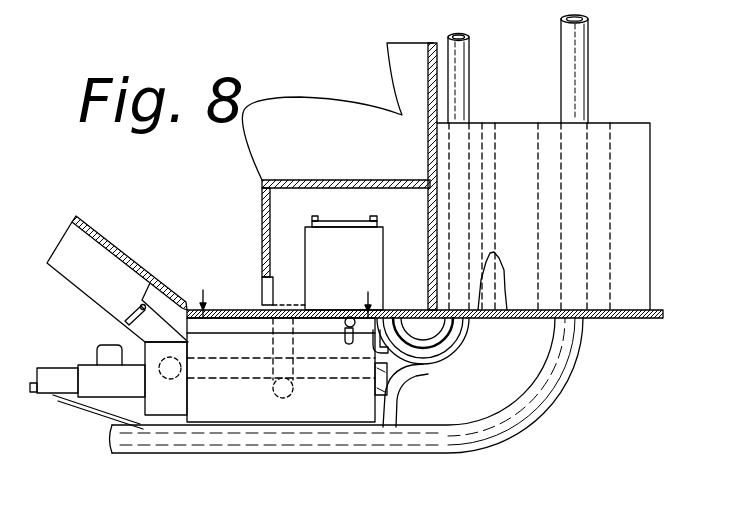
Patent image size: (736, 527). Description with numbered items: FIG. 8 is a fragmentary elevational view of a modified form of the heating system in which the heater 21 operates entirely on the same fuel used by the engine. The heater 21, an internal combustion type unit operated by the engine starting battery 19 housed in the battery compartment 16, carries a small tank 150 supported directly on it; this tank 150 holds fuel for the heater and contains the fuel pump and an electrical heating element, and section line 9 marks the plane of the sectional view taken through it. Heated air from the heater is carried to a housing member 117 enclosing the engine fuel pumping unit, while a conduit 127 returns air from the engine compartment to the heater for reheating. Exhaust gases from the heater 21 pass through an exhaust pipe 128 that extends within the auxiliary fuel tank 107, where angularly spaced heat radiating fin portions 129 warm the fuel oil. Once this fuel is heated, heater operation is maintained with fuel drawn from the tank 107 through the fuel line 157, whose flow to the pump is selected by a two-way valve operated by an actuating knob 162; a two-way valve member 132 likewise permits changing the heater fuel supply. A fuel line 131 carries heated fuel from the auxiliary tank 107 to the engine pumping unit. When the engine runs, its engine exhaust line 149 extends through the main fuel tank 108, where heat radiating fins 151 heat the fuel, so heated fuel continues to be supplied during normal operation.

The section line 9- 9 is at (277, 293).
The battery compartment 16 is at (285, 200).
The engine starting battery 19 is at (373, 250).
The heater 21 is at (243, 413).
The auxiliary fuel tank 107 is at (467, 128).
The main fuel tank 108 is at (637, 200).
The housing member 117 is at (135, 212).
The conduit 127 is at (90, 283).
The exhaust pipe 128 is at (438, 355).
The heat radiating fin portions 129 is at (485, 155).
The fuel line 131 is at (383, 424).
The two-way valve member 132 is at (470, 316).
The engine exhaust line 149 is at (550, 398).
The tank 150 is at (230, 318).
The heat radiating fins 151 is at (610, 156).
The fuel line 157 is at (413, 289).
The actuating knob 162 is at (348, 318).